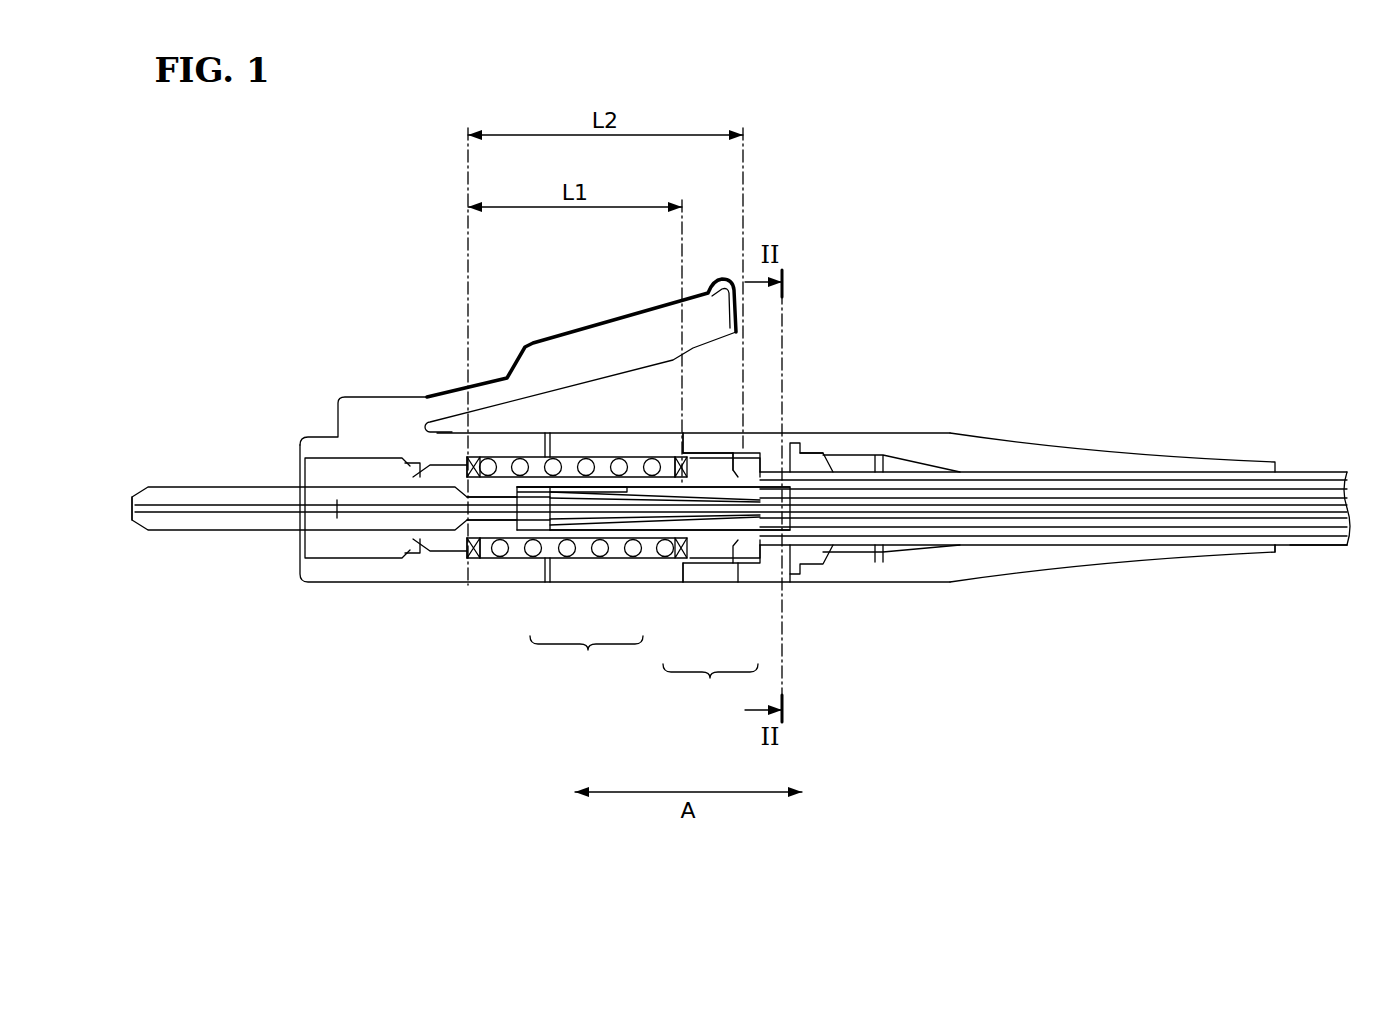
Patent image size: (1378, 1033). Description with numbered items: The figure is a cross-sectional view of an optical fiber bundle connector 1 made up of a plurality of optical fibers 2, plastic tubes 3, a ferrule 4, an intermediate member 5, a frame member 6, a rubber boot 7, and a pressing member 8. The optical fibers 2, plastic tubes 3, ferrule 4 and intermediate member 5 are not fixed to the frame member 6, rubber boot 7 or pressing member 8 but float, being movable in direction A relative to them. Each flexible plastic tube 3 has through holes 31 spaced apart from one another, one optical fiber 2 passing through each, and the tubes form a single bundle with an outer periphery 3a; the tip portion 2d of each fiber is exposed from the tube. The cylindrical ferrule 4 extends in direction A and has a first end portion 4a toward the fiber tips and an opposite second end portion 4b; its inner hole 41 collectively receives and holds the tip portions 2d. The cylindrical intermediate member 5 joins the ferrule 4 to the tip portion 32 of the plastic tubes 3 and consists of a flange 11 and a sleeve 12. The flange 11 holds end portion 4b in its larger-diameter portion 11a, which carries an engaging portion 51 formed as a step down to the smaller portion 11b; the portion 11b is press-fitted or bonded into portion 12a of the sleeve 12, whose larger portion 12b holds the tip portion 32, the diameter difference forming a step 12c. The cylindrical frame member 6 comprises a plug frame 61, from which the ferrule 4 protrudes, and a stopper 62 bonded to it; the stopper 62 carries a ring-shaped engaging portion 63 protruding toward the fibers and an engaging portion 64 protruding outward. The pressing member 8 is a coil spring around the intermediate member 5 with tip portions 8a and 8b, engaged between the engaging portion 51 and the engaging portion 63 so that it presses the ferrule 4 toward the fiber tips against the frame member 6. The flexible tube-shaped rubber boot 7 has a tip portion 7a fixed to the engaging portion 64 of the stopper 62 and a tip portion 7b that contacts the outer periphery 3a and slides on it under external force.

The optical fiber bundle connector 1 is at (972, 260).
The optical fiber 2 is at (790, 492).
The tip portion 2d is at (337, 512).
The plastic tube 3 is at (1316, 472).
The outer periphery 3a is at (1318, 547).
The ferrule 4 is at (213, 487).
The end portion 4a is at (133, 497).
The end portion 4b is at (453, 530).
The intermediate member 5 is at (653, 582).
The frame member 6 is at (725, 581).
The rubber boot 7 is at (952, 433).
The tip portion 7a is at (758, 568).
The tip portion 7b is at (1268, 555).
The pressing member 8 is at (585, 462).
The tip portion 8a is at (482, 552).
The tip portion 8b is at (672, 462).
The flange 11 is at (517, 535).
The portion 11a is at (437, 475).
The portion 11b is at (534, 487).
The sleeve 12 is at (653, 535).
The portion 12a is at (562, 487).
The portion 12b is at (790, 454).
The step 12c is at (733, 470).
The through hole 31 is at (1165, 496).
The tip portion 32 is at (755, 508).
The inner hole 41 is at (408, 513).
The engaging portion 51 is at (462, 553).
The plug frame 61 is at (663, 582).
The stopper 62 is at (712, 582).
The engaging portion 63 is at (697, 458).
The engaging portion 64 is at (805, 453).